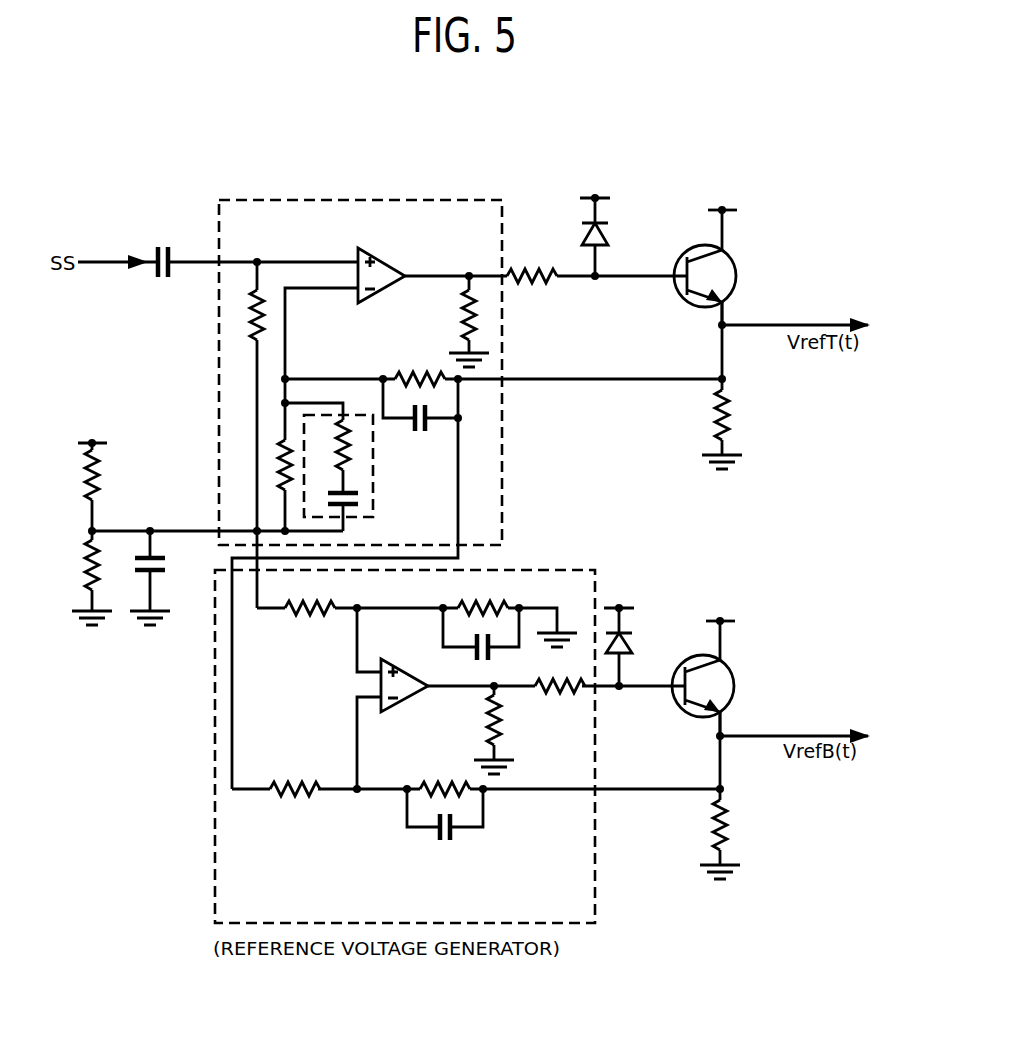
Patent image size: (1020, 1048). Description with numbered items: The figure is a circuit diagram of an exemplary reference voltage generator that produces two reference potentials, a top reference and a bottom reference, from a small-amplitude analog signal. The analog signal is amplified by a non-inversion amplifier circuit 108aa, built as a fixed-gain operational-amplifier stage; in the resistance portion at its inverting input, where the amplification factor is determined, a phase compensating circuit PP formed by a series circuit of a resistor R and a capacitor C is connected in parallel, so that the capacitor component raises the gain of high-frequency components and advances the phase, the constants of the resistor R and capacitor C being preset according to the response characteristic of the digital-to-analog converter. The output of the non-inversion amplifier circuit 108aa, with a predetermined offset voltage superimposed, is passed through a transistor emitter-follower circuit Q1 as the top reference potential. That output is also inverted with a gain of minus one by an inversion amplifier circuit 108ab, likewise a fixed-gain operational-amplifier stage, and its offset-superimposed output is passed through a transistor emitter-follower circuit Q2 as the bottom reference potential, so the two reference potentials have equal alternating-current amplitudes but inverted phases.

The non-inversion amplifier circuit 108aa is at (446, 187).
The inversion amplifier circuit 108ab is at (586, 556).
The transistor emitter-follower circuit Q1 is at (740, 262).
The transistor emitter-follower circuit Q2 is at (740, 672).
The phase compensating circuit PP is at (380, 470).
The resistor R is at (349, 445).
The capacitor C is at (332, 500).